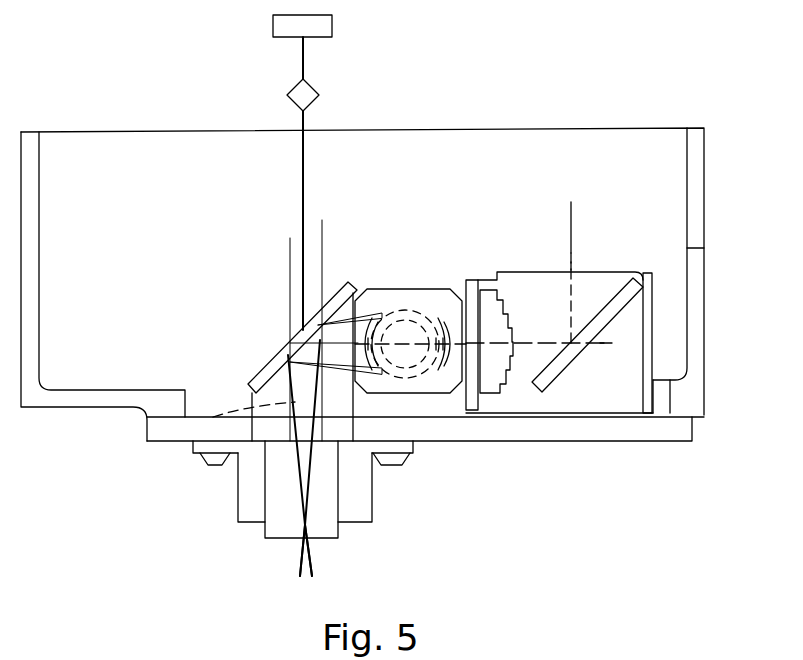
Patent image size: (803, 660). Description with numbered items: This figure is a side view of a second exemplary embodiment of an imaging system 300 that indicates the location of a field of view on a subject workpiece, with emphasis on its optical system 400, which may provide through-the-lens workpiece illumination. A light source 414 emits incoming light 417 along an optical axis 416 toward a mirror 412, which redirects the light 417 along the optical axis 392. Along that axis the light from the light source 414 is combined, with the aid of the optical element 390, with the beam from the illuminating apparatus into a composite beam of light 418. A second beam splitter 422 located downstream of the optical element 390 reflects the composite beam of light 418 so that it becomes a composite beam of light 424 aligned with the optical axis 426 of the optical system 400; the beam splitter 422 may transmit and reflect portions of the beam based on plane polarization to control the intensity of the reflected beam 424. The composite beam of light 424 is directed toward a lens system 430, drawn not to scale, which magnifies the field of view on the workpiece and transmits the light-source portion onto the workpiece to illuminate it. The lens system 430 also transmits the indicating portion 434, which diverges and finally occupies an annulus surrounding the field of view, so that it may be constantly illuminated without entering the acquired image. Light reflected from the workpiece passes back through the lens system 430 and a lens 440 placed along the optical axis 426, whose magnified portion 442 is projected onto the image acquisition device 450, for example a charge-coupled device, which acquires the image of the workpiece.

The imaging system 300 is at (690, 453).
The optical element 390 is at (428, 288).
The optical axis 392 is at (603, 343).
The optical system 400 is at (102, 497).
The mirror 412 is at (612, 283).
The light source 414 is at (583, 87).
The optical axis 416 is at (567, 209).
The incoming light 417 is at (573, 268).
The composite beam of light 418 is at (363, 313).
The second beam splitter 422 is at (262, 352).
The composite beam of light 424 is at (200, 425).
The optical axis 426 is at (302, 168).
The lens system 430 is at (280, 530).
The indicating portion 434 is at (345, 535).
The lens 440 is at (289, 93).
The magnified portion 442 is at (305, 60).
The image acquisition device 450 is at (327, 27).